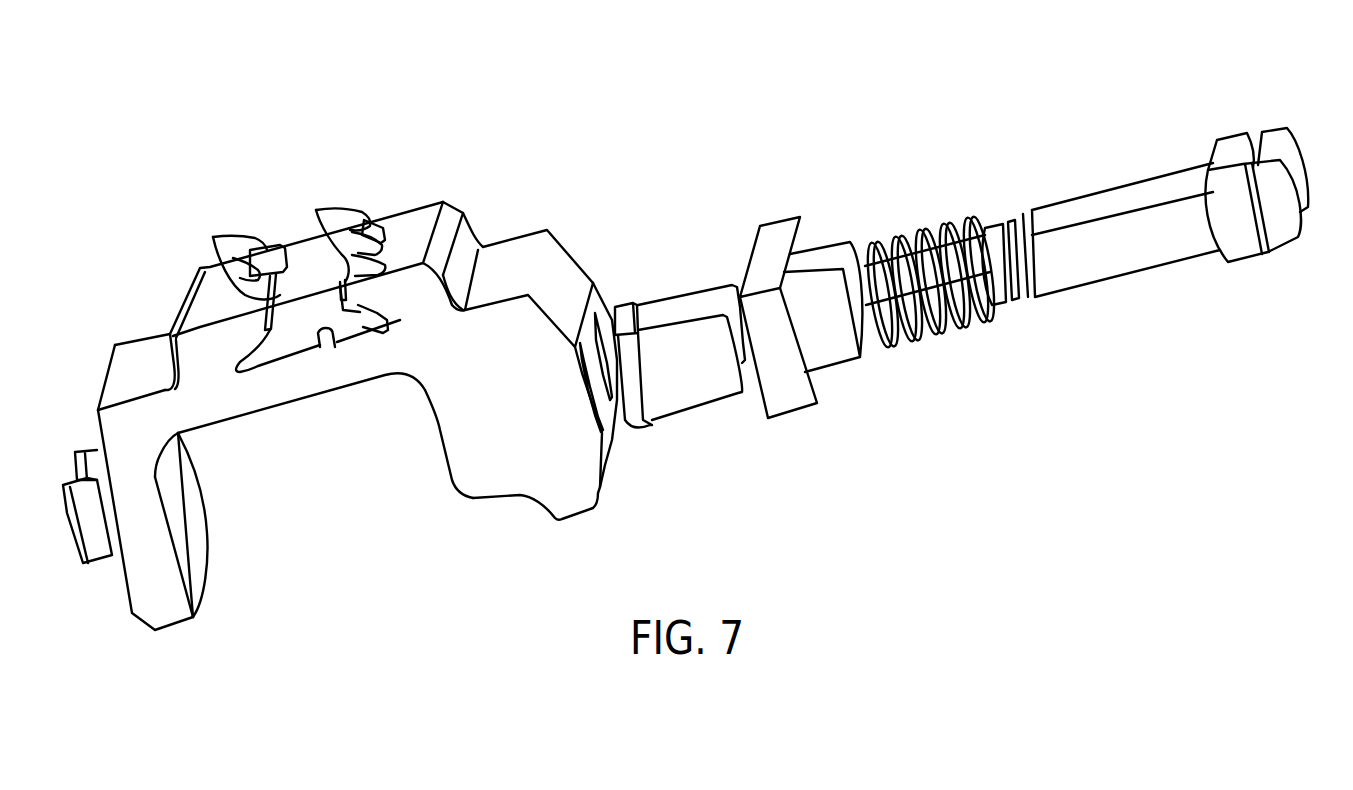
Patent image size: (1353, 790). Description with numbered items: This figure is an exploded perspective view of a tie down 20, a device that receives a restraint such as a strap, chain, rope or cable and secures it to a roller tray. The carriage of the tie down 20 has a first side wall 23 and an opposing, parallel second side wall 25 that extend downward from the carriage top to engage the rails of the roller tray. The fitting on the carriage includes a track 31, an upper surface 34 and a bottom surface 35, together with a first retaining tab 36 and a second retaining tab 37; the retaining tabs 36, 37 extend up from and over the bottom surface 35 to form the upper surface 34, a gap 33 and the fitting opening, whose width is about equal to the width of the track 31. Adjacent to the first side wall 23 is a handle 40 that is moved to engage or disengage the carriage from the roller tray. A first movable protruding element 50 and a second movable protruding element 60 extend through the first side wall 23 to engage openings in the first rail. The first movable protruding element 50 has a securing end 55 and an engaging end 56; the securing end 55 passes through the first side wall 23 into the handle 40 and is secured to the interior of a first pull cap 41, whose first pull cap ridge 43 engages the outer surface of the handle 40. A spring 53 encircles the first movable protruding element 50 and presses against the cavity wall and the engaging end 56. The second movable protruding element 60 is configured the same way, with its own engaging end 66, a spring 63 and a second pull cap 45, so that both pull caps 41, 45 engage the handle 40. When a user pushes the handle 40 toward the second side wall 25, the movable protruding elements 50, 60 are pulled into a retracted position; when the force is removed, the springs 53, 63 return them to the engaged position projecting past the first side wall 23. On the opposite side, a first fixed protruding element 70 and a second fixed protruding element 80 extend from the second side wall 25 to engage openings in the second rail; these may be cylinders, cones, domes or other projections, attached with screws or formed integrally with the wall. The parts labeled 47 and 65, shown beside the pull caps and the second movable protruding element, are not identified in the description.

The tie down 20 is at (321, 427).
The first side wall 23 is at (480, 485).
The second side wall 25 is at (152, 610).
The track 31 is at (290, 345).
The gap 33 is at (305, 258).
The upper surface 34 is at (365, 328).
The bottom surface 35 is at (320, 347).
The first retaining tab 36 is at (316, 211).
The second retaining tab 37 is at (214, 236).
The handle 40 is at (790, 412).
The first pull cap 41 is at (672, 400).
The first pull cap ridge 43 is at (637, 425).
The second pull cap 45 is at (680, 305).
The boss 47 is at (620, 309).
The first movable protruding element 50 is at (1106, 231).
The spring 53 is at (973, 317).
The securing end 55 is at (1005, 298).
The engaging end 56 is at (1273, 237).
The second movable protruding element 60 is at (1313, 152).
The spring 63 is at (930, 230).
The ring 65 is at (1010, 219).
The engaging end 66 is at (1263, 142).
The first fixed protruding element 70 is at (85, 525).
The second fixed protruding element 80 is at (87, 467).